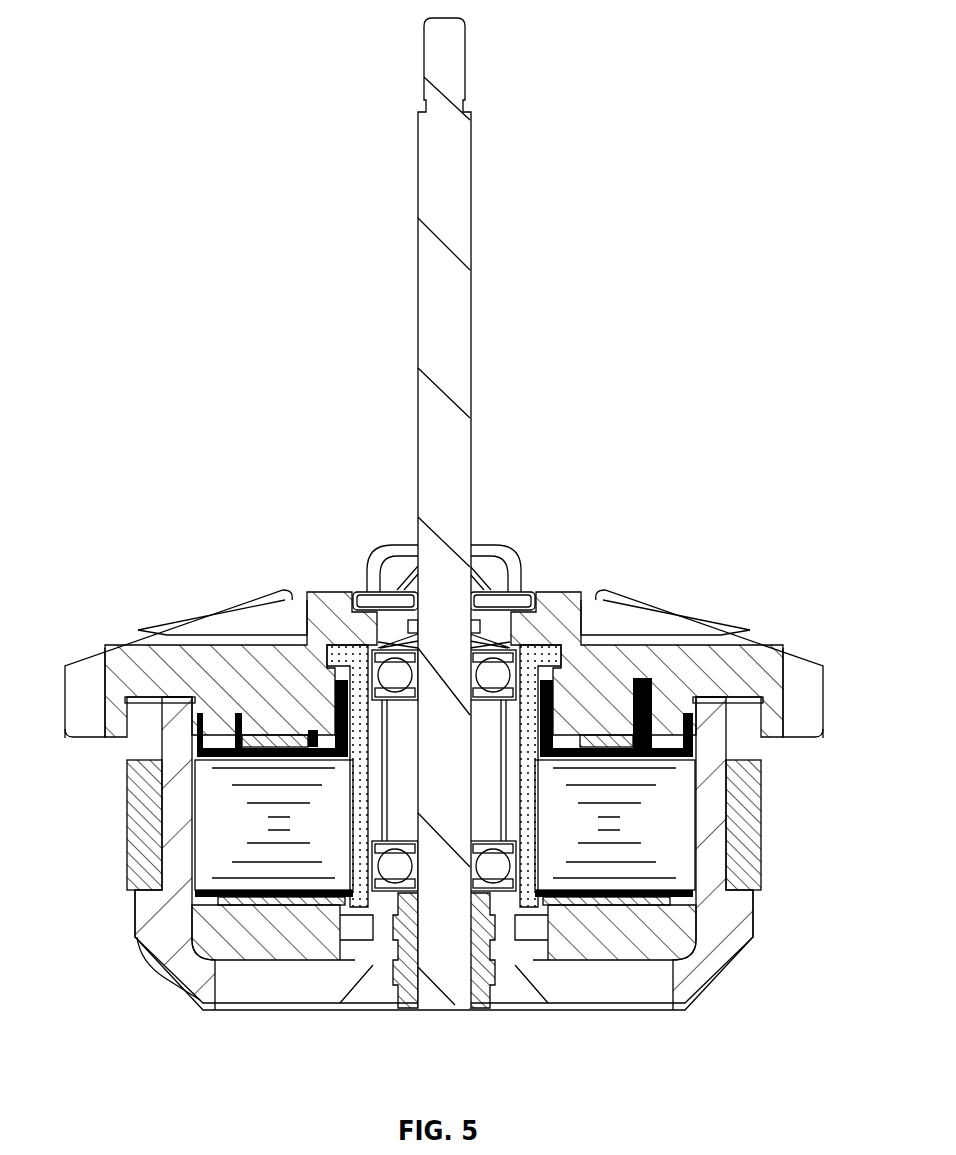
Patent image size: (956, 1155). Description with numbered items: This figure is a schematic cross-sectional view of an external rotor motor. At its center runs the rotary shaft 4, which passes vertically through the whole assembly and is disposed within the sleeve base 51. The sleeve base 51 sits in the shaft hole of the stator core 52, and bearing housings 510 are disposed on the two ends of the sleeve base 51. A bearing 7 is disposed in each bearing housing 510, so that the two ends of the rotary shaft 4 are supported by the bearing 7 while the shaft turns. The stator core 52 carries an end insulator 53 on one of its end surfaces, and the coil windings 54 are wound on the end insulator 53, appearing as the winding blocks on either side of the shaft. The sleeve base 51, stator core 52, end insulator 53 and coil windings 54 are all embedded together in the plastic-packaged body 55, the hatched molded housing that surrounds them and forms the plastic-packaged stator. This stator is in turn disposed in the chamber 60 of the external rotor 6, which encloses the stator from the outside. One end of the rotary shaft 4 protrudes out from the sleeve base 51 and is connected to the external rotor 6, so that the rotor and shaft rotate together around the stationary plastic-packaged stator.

The rotary shaft 4 is at (448, 353).
The bearing 7 is at (378, 647).
The plastic-packaged body 55 is at (170, 673).
The sleeve base 51 is at (518, 722).
The external rotor 6 is at (177, 838).
The stator core 52 is at (655, 817).
The end insulator 53 is at (683, 902).
The coil windings 54 is at (688, 937).
The chamber 60 is at (225, 967).
The bearing housing 510 is at (392, 893).